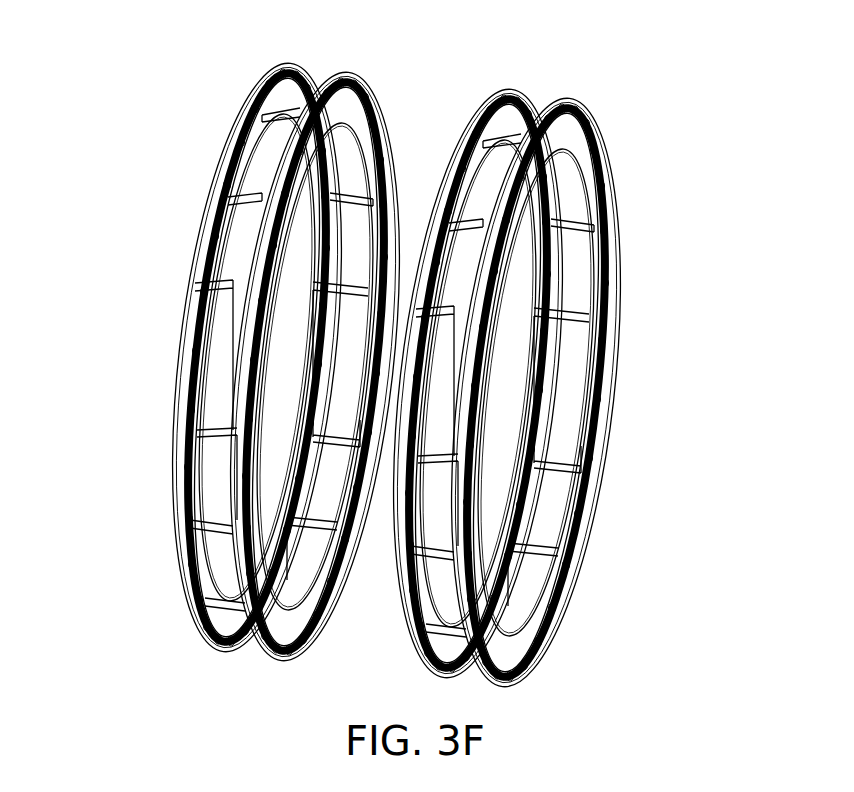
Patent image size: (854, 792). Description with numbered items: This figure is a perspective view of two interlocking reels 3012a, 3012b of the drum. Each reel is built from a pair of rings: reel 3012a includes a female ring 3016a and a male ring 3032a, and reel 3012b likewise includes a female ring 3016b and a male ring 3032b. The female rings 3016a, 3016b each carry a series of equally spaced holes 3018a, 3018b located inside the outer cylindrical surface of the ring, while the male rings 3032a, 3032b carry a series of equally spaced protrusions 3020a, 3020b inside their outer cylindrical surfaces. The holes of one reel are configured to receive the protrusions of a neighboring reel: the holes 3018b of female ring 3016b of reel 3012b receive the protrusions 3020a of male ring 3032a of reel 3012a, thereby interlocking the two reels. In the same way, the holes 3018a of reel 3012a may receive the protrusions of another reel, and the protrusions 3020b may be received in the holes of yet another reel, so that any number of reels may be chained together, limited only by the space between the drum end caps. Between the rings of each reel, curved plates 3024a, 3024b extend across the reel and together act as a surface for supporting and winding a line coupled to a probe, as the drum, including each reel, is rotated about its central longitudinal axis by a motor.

The interlocking reel 3012a is at (265, 72).
The interlocking reel 3012b is at (485, 97).
The female ring 3016a is at (306, 66).
The female ring 3016b is at (527, 92).
The holes 3018a is at (195, 377).
The holes 3018b is at (554, 416).
The protrusions 3020a is at (323, 613).
The protrusions 3020b is at (540, 637).
The curved plates 3024a is at (357, 250).
The curved plates 3024b is at (580, 275).
The male ring 3032a is at (373, 77).
The male ring 3032b is at (600, 123).